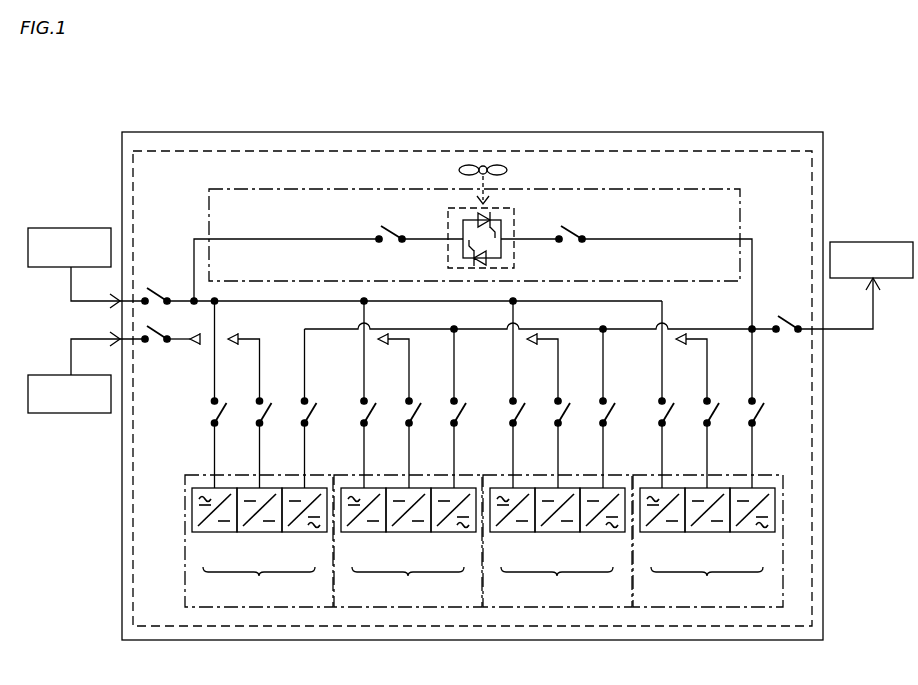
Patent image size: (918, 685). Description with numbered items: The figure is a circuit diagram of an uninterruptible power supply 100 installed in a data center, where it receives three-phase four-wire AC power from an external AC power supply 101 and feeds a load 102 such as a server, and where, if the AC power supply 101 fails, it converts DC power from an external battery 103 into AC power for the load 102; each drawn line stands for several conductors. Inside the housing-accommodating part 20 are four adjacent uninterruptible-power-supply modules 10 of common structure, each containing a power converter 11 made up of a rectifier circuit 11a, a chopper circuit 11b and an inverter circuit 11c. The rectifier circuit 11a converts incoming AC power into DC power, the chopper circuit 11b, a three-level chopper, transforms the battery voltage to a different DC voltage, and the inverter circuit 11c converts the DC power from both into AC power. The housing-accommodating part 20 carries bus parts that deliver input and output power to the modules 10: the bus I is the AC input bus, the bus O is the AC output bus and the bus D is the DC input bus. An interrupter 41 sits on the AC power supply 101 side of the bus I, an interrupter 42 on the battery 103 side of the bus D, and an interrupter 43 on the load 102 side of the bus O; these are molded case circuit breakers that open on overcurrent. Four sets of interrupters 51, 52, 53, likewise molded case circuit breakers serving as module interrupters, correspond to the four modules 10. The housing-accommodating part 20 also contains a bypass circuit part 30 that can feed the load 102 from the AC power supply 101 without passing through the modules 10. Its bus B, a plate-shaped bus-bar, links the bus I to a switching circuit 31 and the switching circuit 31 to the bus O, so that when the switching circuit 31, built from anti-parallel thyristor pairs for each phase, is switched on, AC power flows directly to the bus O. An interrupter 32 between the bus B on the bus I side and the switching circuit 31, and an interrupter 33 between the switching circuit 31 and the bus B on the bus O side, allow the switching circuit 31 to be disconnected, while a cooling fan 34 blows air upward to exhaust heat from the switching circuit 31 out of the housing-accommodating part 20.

The uninterruptible power supply 100 is at (812, 132).
The AC power supply 101 is at (53, 228).
The load 102 is at (863, 242).
The battery 103 is at (71, 413).
The uninterruptible-power-supply module 10 is at (267, 607).
The power converter 11 is at (483, 581).
The rectifier circuit 11a is at (209, 532).
The chopper circuit 11b is at (254, 532).
The inverter circuit 11c is at (299, 532).
The housing-accommodating part 20 is at (741, 151).
The bypass circuit part 30 is at (662, 188).
The switching circuit 31 is at (515, 223).
The interrupter 32 is at (400, 228).
The interrupter 33 is at (586, 228).
The cooling fan 34 is at (452, 166).
The interrupter 41 is at (150, 275).
The interrupter 42 is at (164, 352).
The interrupter 43 is at (779, 308).
The interrupter 51 is at (430, 394).
The interrupter 52 is at (473, 410).
The interrupter 53 is at (520, 408).
The bus B is at (262, 239).
The bus D is at (181, 346).
The bus I is at (279, 304).
The bus O is at (703, 329).